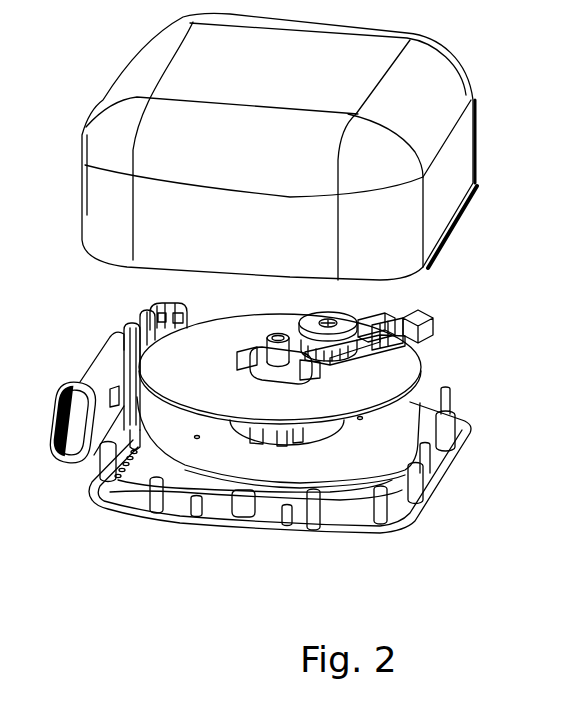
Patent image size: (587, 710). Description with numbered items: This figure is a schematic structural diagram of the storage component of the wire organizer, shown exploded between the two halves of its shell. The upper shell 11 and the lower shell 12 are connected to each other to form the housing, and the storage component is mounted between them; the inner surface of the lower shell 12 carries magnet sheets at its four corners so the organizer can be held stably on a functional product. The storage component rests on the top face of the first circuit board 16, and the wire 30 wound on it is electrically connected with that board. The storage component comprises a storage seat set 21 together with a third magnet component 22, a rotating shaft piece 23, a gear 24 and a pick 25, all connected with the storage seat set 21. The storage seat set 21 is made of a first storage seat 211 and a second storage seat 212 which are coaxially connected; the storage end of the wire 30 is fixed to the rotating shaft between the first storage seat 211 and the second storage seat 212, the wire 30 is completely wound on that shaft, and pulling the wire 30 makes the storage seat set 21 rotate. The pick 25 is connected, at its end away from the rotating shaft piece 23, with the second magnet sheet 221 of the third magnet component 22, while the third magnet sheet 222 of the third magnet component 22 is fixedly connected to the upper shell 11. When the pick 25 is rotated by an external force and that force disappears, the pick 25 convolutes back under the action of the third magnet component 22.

The upper shell 11 is at (433, 82).
The lower shell 12 is at (403, 527).
The first circuit board 16 is at (390, 478).
The storage seat set 21 is at (227, 460).
The first storage seat 211 is at (195, 455).
The second storage seat 212 is at (230, 407).
The third magnet component 22 is at (466, 303).
The second magnet sheet 221 is at (390, 313).
The third magnet sheet 222 is at (420, 313).
The rotating shaft piece 23 is at (240, 350).
The gear 24 is at (310, 317).
The pick 25 is at (387, 350).
The wire 30 is at (112, 332).